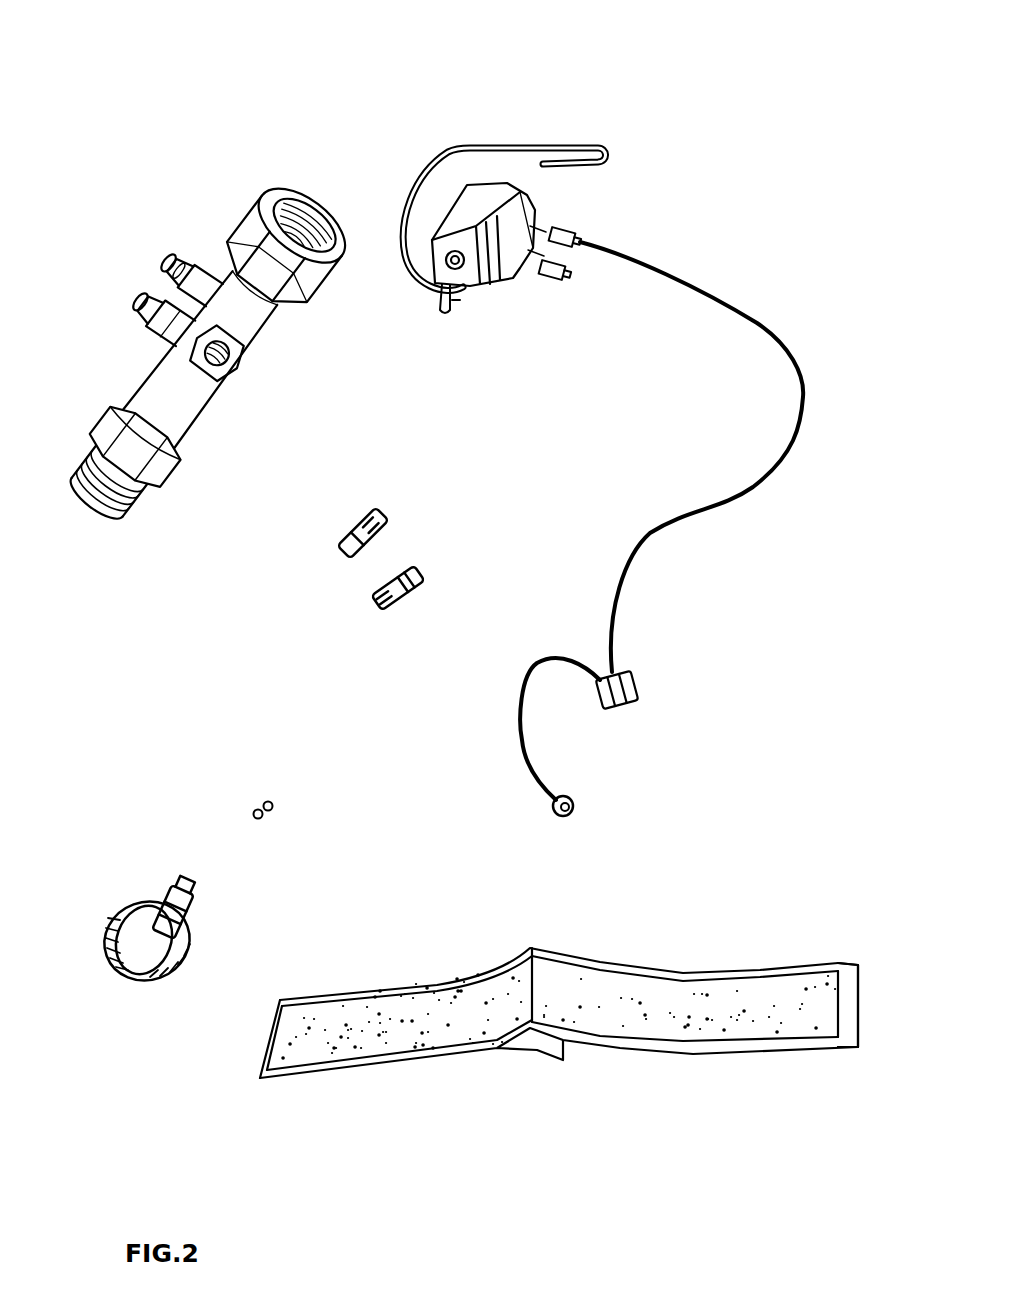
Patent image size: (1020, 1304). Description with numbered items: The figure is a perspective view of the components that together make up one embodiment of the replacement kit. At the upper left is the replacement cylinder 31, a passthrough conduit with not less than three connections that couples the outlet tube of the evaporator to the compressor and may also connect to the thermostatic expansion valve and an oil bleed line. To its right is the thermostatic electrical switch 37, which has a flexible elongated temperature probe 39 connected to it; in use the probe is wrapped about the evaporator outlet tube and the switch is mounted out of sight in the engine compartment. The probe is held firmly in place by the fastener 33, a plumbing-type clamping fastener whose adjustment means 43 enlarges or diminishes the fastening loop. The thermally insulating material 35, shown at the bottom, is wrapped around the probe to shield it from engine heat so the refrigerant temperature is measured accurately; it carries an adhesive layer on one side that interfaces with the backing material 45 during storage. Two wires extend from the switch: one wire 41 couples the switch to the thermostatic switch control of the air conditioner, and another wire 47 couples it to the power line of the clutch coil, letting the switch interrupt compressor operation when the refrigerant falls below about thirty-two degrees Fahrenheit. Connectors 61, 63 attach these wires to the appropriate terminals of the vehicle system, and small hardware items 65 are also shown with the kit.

The replacement cylinder 31 is at (128, 387).
The fastener 33 is at (99, 924).
The thermally insulating material 35 is at (741, 966).
The thermostatic electrical switch 37 is at (489, 292).
The flexible elongated temperature probe 39 is at (565, 146).
The wire 41 is at (779, 479).
The adjustment means 43 is at (197, 904).
The backing material 45 is at (848, 1014).
The wire 47 is at (529, 668).
The connector 61 is at (383, 507).
The connector 63 is at (426, 571).
The fasteners 65 is at (277, 804).